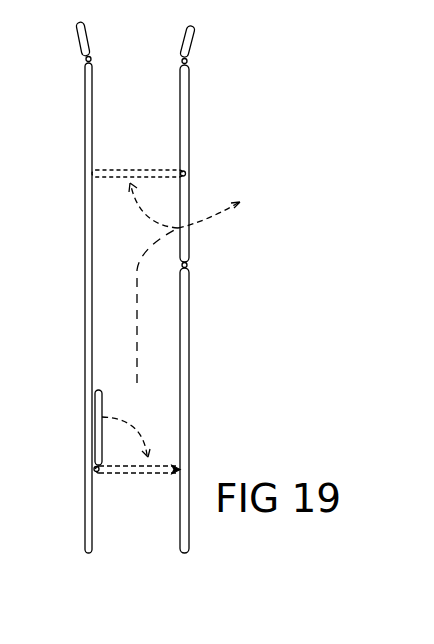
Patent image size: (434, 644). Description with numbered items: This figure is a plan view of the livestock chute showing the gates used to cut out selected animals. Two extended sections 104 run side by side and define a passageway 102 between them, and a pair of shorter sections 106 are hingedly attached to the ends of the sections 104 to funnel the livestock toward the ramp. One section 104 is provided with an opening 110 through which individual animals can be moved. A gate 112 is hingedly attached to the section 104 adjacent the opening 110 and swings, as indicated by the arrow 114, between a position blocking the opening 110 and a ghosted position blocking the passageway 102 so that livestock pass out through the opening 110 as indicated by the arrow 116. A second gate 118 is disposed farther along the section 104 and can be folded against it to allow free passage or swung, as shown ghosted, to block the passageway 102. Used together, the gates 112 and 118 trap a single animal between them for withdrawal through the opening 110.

The passageway 102 is at (152, 120).
The extended sections 104 is at (85, 201).
The shorter sections 106 is at (86, 30).
The opening 110 is at (191, 246).
The gate 112 is at (143, 170).
The arrow 114 is at (146, 219).
The arrow 116 is at (137, 327).
The second gate 118 is at (85, 441).